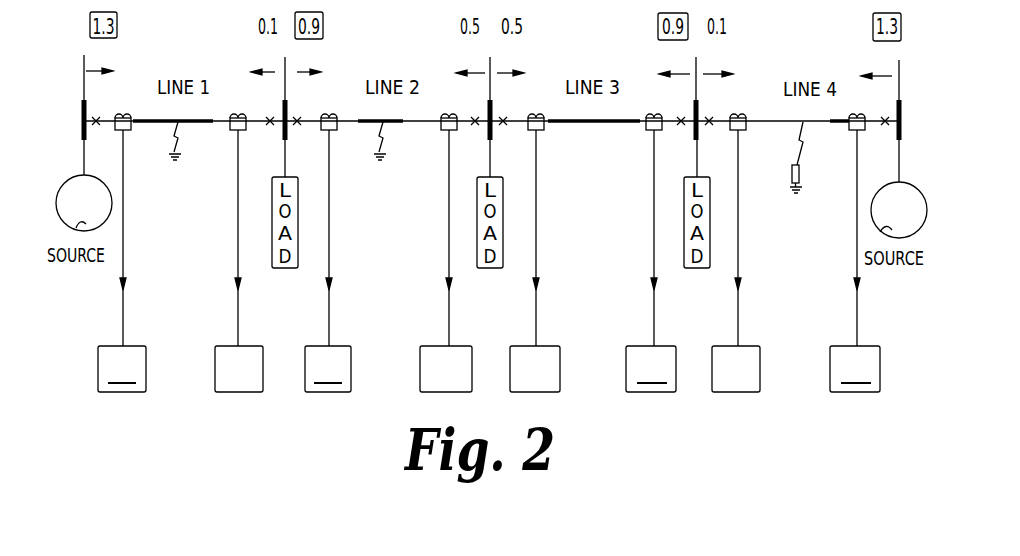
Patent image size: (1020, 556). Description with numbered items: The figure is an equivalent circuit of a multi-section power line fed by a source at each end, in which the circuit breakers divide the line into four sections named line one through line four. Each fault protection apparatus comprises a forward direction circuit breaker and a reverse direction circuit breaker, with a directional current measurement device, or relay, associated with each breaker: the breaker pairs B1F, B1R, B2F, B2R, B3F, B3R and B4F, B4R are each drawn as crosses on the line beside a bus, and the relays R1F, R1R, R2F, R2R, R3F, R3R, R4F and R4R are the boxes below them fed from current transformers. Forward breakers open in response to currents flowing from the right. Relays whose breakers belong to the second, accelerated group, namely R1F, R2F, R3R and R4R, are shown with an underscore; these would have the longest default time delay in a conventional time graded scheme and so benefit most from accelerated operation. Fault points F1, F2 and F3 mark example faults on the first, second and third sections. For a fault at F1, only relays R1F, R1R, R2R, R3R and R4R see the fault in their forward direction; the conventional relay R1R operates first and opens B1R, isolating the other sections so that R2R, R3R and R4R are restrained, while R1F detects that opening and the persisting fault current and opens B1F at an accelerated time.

The circuit breaker B1F is at (97, 140).
The circuit breaker B1R is at (259, 140).
The circuit breaker B2F is at (304, 140).
The circuit breaker B2R is at (468, 140).
The circuit breaker B3F is at (506, 140).
The circuit breaker B3R is at (672, 141).
The circuit breaker B4F is at (713, 141).
The circuit breaker B4R is at (876, 141).
The relay R1F is at (122, 261).
The relay R1R is at (239, 261).
The relay R2F is at (328, 261).
The relay R2R is at (446, 261).
The relay R3F is at (535, 261).
The relay R3R is at (651, 261).
The relay R4F is at (736, 261).
The relay R4R is at (855, 261).
The fault point F1 is at (181, 158).
The fault point F2 is at (386, 158).
The fault point F3 is at (810, 159).